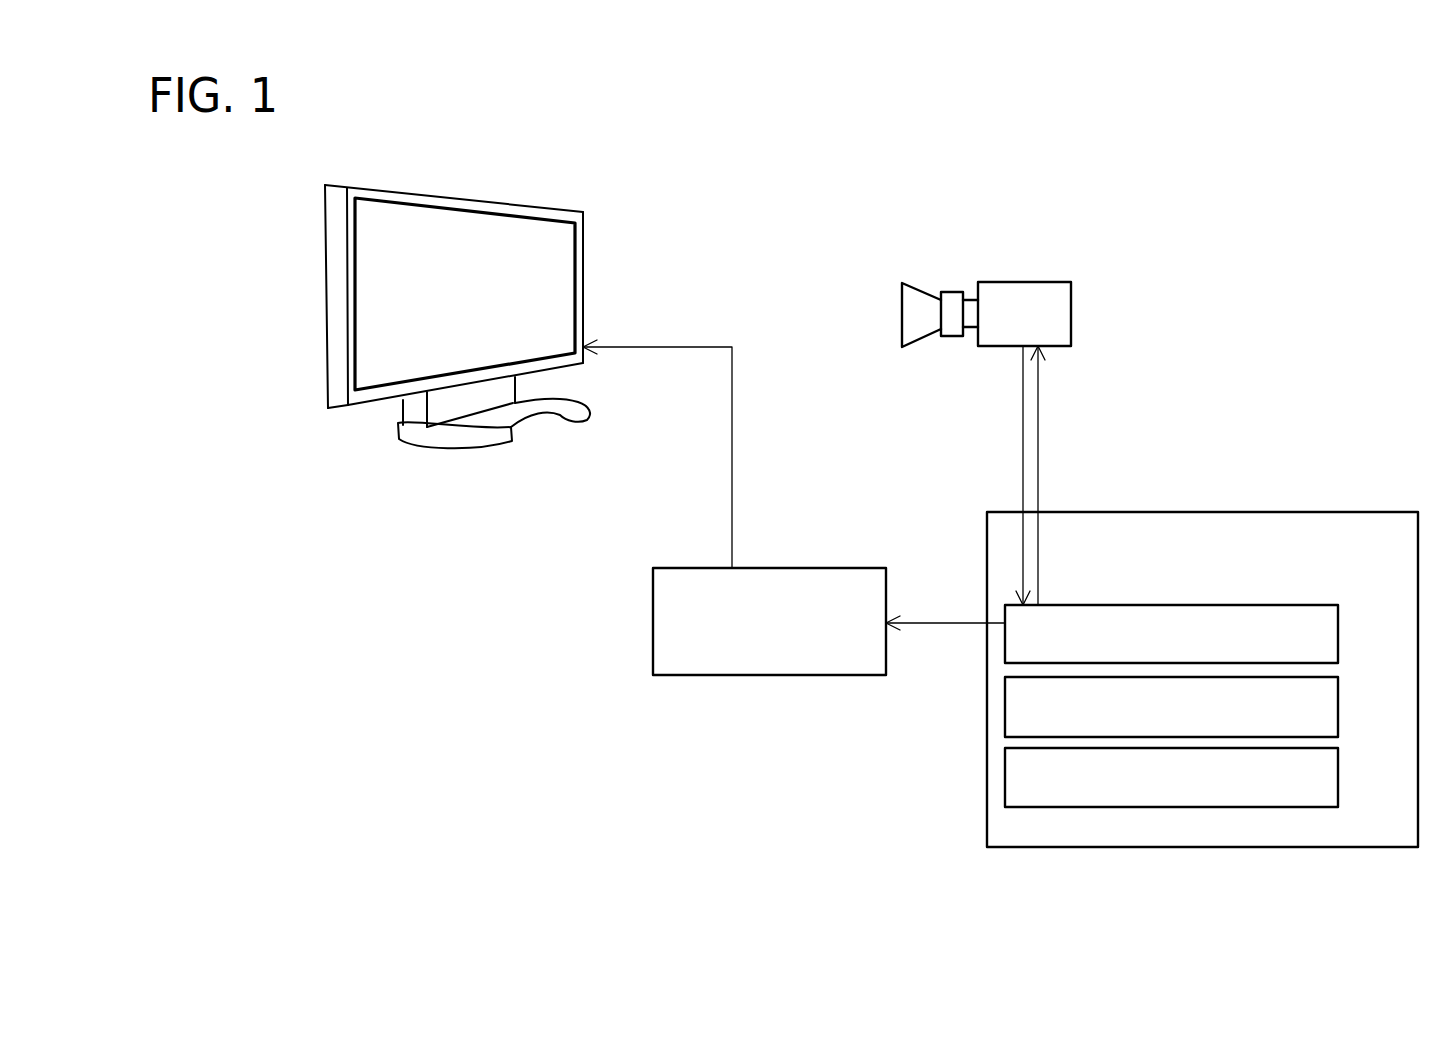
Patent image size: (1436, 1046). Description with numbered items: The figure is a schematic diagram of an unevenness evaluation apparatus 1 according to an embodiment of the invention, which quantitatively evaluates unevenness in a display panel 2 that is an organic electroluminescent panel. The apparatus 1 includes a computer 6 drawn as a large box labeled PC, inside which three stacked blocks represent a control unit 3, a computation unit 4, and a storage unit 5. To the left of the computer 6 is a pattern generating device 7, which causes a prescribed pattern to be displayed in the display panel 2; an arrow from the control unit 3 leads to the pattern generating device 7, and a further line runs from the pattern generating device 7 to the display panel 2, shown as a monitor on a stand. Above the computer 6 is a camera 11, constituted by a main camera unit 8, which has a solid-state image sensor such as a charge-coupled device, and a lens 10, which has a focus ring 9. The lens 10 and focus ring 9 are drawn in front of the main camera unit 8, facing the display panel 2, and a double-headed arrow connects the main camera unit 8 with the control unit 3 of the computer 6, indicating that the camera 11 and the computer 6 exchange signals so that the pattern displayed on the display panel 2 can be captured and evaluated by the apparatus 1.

The unevenness evaluation apparatus 1 is at (1219, 199).
The display panel 2 is at (535, 258).
The control unit 3 is at (1338, 628).
The computation unit 4 is at (1338, 702).
The storage unit 5 is at (1338, 773).
The computer 6 is at (1202, 636).
The pattern generating device 7 is at (789, 566).
The main camera unit 8 is at (1024, 262).
The focus ring 9 is at (950, 291).
The lens 10 is at (903, 282).
The camera 11 is at (1015, 282).